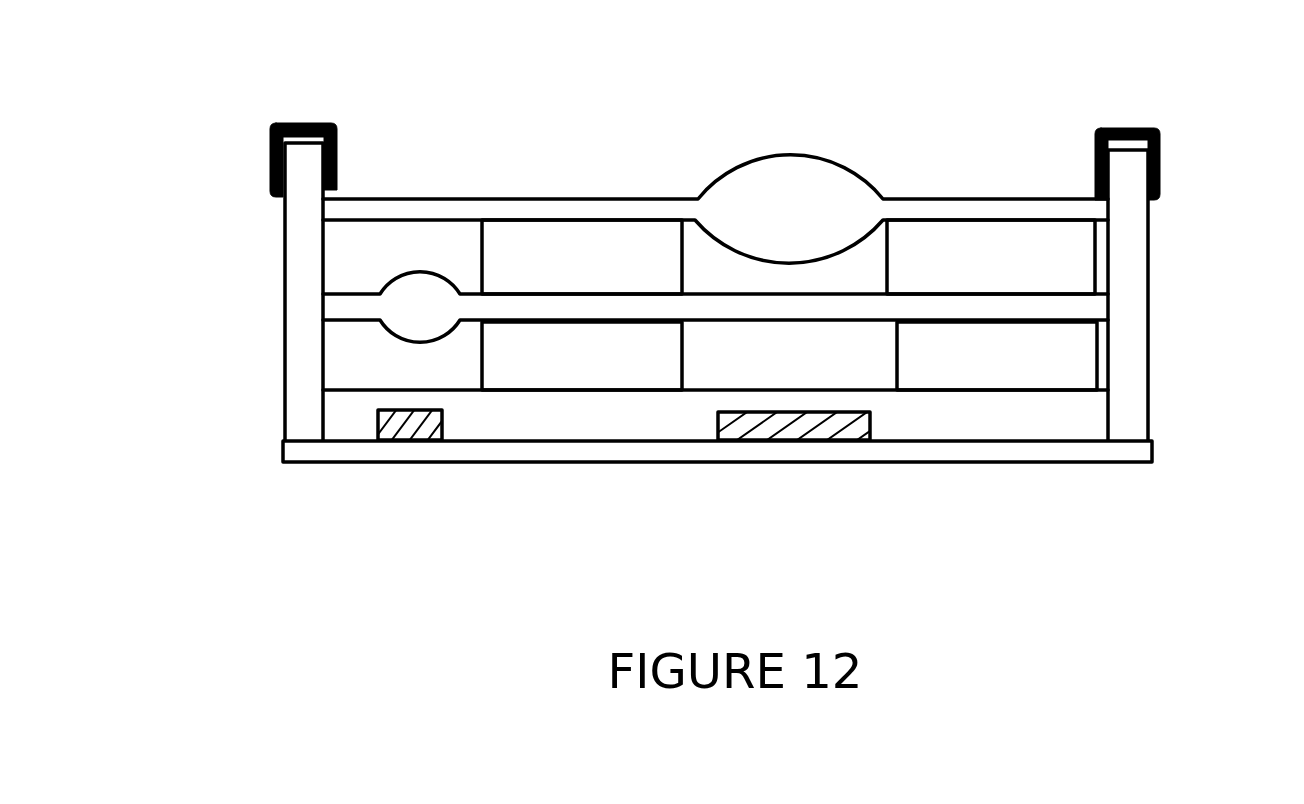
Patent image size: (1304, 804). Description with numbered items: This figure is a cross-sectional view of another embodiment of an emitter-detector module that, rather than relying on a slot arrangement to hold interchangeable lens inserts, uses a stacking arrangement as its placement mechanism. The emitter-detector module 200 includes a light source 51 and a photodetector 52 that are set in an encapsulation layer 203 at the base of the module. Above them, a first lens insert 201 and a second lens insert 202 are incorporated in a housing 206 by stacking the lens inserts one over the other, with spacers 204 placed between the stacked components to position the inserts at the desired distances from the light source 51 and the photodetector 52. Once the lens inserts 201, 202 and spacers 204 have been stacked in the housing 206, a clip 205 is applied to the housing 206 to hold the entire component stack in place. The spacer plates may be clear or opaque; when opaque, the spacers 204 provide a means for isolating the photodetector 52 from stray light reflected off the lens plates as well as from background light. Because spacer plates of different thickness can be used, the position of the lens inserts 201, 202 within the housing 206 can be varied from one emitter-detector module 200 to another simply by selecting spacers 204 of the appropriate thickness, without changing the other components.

The emitter-detector module 200 is at (237, 120).
The lens insert 201 is at (347, 303).
The lens insert 202 is at (598, 205).
The encapsulation layer 203 is at (582, 412).
The spacer 204 is at (525, 233).
The clip 205 is at (309, 123).
The housing 206 is at (296, 238).
The light source 51 is at (398, 432).
The photodetector 52 is at (745, 428).